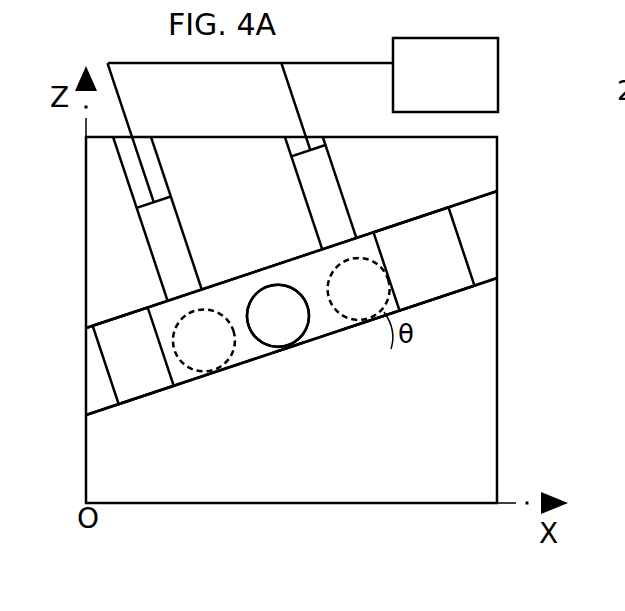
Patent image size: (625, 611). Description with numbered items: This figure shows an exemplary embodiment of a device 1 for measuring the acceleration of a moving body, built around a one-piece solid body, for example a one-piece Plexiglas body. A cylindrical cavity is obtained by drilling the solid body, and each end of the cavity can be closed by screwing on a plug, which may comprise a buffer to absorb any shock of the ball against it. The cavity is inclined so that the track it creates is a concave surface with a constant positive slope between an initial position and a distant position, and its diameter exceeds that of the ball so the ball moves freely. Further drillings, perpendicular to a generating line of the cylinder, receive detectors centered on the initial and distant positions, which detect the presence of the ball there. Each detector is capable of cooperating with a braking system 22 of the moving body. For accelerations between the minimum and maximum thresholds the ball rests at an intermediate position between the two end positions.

The measuring device 1 is at (521, 302).
The braking system 22 is at (303, 75).